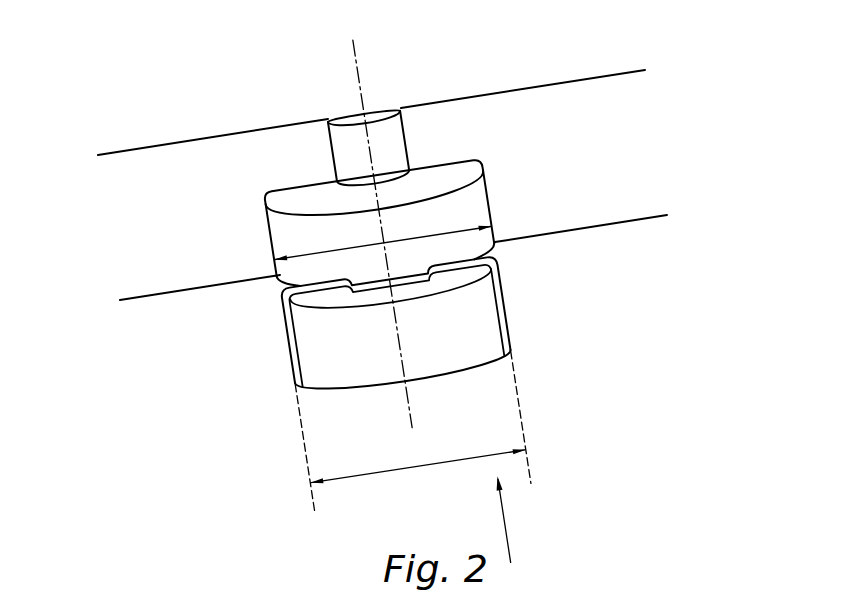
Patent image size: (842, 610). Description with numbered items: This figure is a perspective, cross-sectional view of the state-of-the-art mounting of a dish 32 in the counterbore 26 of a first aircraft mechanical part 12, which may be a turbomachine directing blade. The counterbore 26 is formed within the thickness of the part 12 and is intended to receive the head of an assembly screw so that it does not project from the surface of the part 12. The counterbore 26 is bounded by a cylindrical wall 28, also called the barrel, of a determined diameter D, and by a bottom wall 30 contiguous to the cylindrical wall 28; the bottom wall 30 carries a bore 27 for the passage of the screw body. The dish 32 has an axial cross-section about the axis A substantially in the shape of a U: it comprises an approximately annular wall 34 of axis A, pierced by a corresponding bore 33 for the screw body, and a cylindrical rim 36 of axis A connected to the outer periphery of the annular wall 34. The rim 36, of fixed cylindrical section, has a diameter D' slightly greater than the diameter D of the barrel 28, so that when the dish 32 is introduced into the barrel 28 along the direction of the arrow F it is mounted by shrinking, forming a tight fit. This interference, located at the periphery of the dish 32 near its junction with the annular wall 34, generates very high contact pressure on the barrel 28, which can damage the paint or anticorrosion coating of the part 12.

The first aircraft mechanical part 12 is at (637, 165).
The counterbore 26 is at (387, 167).
The bore 27 is at (387, 135).
The cylindrical wall 28 is at (490, 188).
The bottom wall 30 is at (307, 202).
The dish 32 is at (415, 329).
The bore 33 is at (360, 290).
The annular wall 34 is at (373, 297).
The cylindrical rim 36 is at (510, 323).